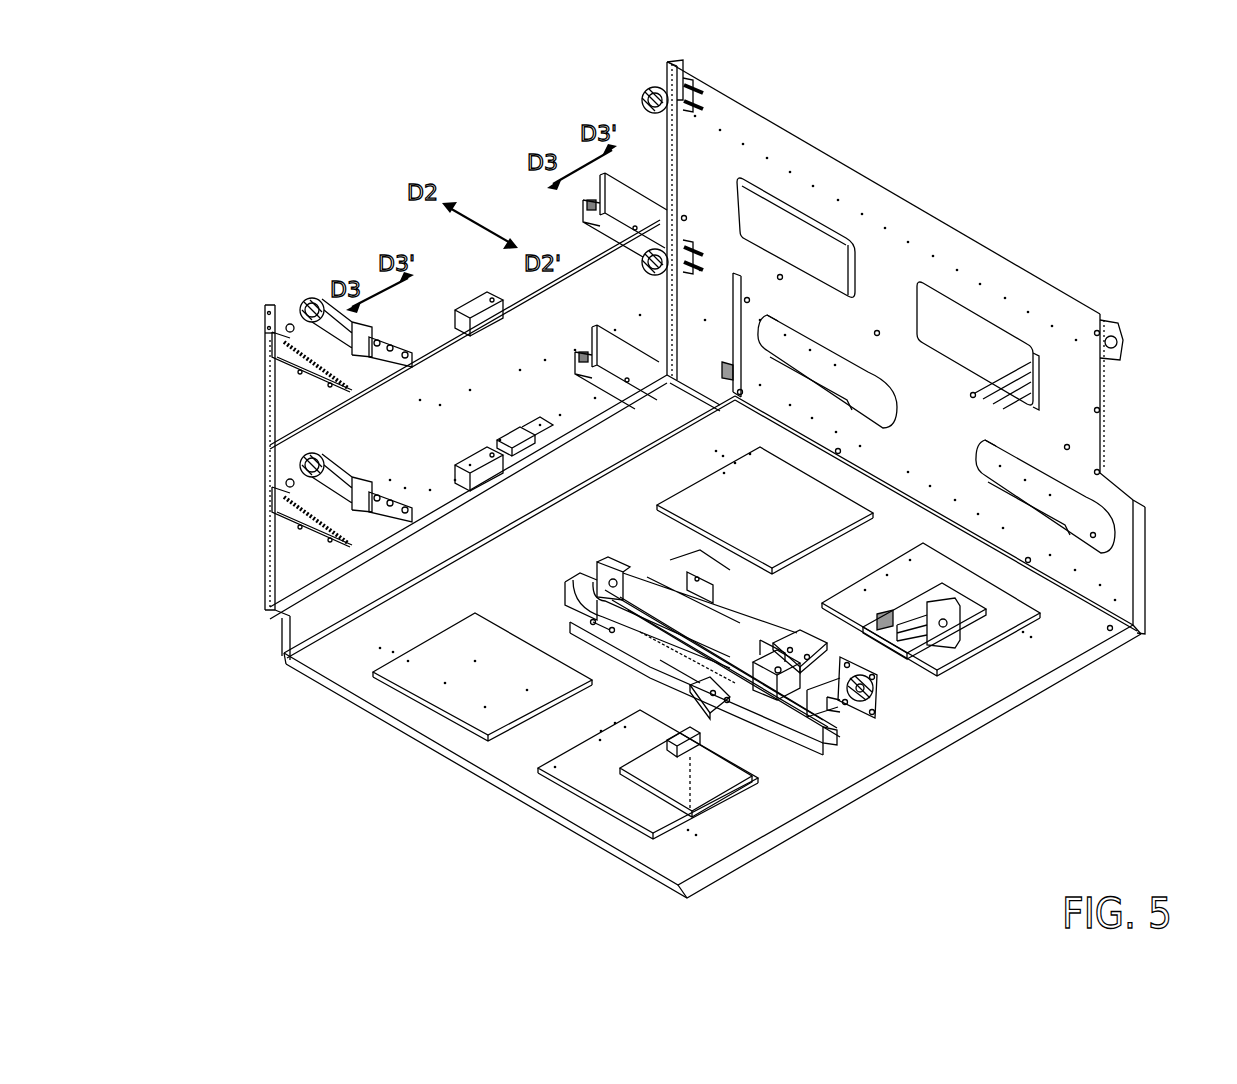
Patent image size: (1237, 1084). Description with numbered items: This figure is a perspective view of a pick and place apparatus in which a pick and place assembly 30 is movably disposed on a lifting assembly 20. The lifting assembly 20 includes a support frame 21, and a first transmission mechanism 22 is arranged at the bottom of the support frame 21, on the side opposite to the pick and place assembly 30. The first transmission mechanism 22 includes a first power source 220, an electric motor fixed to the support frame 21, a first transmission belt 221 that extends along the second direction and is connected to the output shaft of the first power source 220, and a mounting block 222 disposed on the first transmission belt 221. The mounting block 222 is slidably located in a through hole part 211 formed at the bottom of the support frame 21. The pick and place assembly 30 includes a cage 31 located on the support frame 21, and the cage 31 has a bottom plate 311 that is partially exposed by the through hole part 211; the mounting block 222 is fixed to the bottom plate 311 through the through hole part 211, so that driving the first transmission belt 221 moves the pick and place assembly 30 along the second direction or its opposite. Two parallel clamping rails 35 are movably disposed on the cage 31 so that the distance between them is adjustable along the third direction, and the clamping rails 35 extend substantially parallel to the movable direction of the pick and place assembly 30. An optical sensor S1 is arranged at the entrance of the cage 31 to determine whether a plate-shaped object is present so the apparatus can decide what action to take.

The lifting assembly 20 is at (727, 647).
The support frame 21 is at (1053, 696).
The first transmission mechanism 22 is at (751, 732).
The first power source 220 is at (845, 712).
The first transmission belt 221 is at (780, 720).
The mounting block 222 is at (757, 700).
The through hole part 211 is at (603, 650).
The bottom plate 311 is at (675, 672).
The pick and place assembly 30 is at (701, 360).
The cage 31 is at (1062, 323).
The clamping rail 35 is at (623, 200).
The optical sensor S1 is at (472, 306).